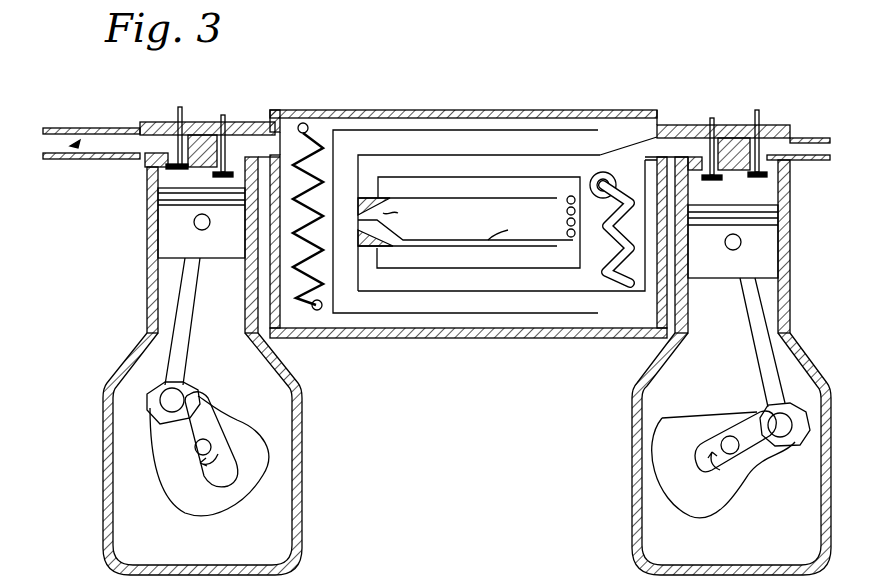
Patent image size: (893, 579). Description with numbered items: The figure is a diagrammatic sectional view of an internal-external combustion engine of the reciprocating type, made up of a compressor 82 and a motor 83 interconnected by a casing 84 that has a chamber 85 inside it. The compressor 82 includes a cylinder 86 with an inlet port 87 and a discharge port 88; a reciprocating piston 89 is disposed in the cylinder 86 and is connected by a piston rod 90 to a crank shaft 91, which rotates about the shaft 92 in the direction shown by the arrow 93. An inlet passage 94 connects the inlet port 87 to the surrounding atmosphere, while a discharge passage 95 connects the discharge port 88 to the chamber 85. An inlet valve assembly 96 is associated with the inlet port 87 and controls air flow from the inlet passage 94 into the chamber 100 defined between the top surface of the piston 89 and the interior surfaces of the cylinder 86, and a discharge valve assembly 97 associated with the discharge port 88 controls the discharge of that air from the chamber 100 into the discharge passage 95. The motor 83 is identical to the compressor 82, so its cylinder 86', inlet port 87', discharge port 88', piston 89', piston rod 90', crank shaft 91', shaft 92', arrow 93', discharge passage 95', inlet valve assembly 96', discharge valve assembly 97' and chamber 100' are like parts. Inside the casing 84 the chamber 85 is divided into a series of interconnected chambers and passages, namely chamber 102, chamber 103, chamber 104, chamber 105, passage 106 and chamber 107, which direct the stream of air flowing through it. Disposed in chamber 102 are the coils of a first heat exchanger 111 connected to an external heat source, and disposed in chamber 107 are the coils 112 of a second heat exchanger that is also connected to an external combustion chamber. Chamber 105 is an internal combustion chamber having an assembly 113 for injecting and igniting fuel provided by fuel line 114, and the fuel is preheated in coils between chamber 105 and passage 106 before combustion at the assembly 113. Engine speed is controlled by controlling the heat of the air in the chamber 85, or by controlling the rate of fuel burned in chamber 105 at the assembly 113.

The compressor 82 is at (297, 518).
The motor 83 is at (641, 503).
The casing 84 is at (372, 336).
The chamber 85 is at (350, 114).
The cylinder 86 is at (212, 234).
The cylinder 86' is at (717, 235).
The inlet port 87 is at (164, 126).
The inlet port 87' is at (712, 124).
The discharge port 88 is at (229, 124).
The discharge port 88' is at (781, 125).
The reciprocating piston 89 is at (201, 223).
The reciprocating piston 89' is at (765, 241).
The piston rod 90 is at (191, 341).
The piston rod 90' is at (752, 362).
The crank shaft 91 is at (201, 462).
The crank shaft 91' is at (723, 475).
The shaft 92 is at (226, 419).
The shaft 92' is at (713, 412).
The arrow 93 is at (225, 465).
The arrow 93' is at (745, 457).
The inlet passage 94 is at (118, 128).
The discharge passage 95 is at (165, 111).
The discharge passage 95' is at (822, 127).
The inlet valve assembly 96 is at (142, 181).
The inlet valve assembly 96' is at (707, 214).
The discharge valve assembly 97 is at (227, 214).
The discharge valve assembly 97' is at (810, 169).
The chamber 100 is at (169, 215).
The chamber 100' is at (779, 194).
The chamber 102 is at (290, 188).
The chamber 103 is at (432, 129).
The chamber 104 is at (463, 153).
The internal combustion chamber 105 is at (489, 227).
The passage 106 is at (489, 186).
The chamber 107 is at (633, 152).
The first heat exchanger 111 is at (322, 125).
The coils of second heat exchanger 112 is at (620, 294).
The fuel injecting and igniting assembly 113 is at (78, 143).
The fuel line 114 is at (47, 160).